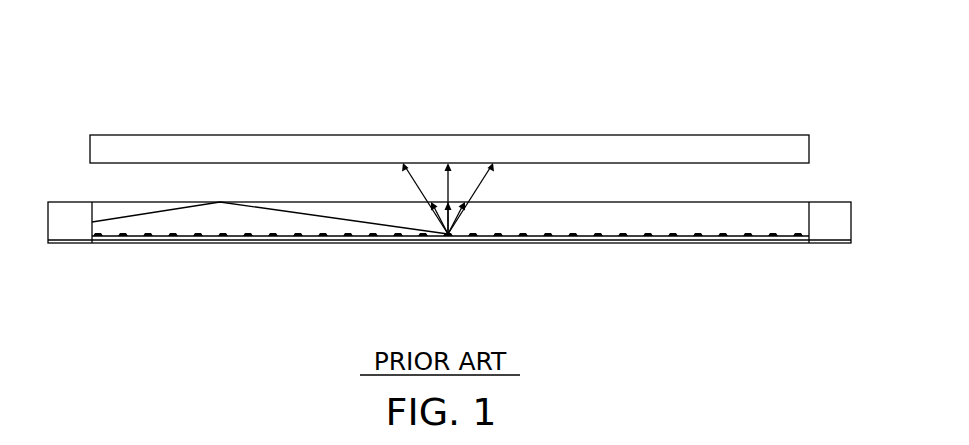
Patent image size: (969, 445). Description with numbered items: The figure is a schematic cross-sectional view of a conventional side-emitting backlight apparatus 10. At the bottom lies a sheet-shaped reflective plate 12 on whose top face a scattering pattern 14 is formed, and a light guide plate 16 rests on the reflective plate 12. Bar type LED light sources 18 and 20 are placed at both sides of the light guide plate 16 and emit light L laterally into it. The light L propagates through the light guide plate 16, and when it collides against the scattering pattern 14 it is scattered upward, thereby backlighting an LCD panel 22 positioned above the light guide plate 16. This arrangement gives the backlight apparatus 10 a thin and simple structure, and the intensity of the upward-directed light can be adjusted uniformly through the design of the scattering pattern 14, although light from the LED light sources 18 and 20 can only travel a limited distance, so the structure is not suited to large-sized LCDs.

The side-emitting backlight apparatus 10 is at (148, 32).
The reflective plate 12 is at (162, 243).
The scattering pattern 14 is at (240, 228).
The light guide plate 16 is at (640, 218).
The LED light source 18 is at (62, 210).
The LED light source 20 is at (835, 212).
The LCD panel 22 is at (760, 145).
The light L is at (337, 213).